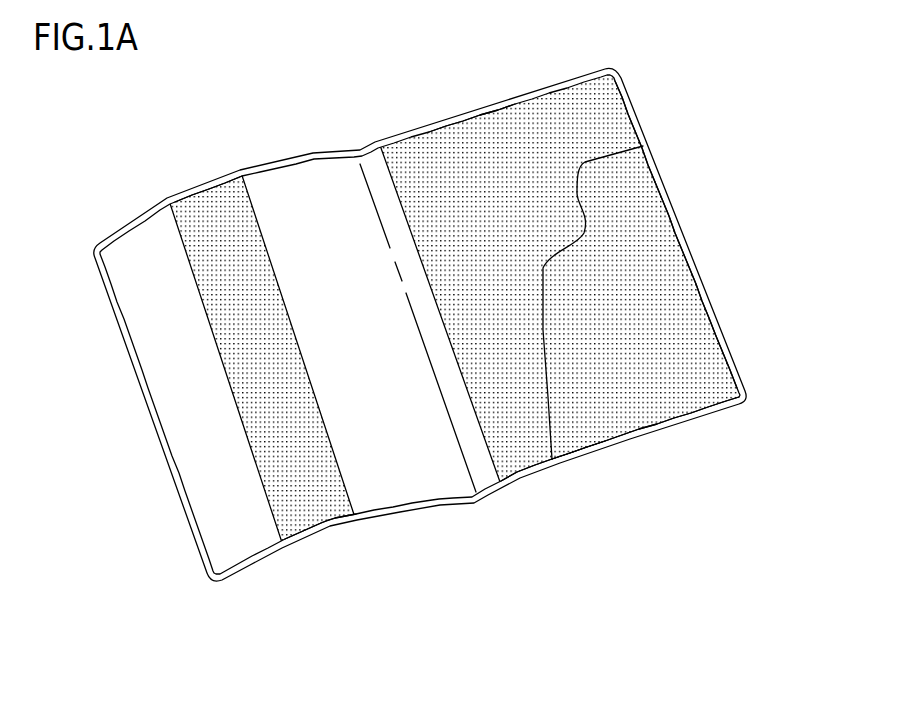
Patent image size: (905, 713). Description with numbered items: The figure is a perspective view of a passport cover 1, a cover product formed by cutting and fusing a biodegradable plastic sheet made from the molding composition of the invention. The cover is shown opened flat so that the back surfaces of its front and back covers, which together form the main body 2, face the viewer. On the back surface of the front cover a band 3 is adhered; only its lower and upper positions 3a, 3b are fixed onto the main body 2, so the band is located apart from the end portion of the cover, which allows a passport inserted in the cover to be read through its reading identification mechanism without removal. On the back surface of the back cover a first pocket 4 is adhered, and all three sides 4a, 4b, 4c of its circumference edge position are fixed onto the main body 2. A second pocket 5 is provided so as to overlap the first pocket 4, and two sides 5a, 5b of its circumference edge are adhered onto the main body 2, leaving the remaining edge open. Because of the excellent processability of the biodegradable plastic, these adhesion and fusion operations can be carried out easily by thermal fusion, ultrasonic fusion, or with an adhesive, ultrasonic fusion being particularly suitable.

The passport cover 1 is at (357, 117).
The main body 2 is at (295, 188).
The band 3 is at (223, 210).
The lower position of the band 3a is at (188, 186).
The upper position of the band 3b is at (315, 531).
The first pocket 4 is at (538, 113).
The side of the circumference edge position of the first pocket 4a is at (467, 104).
The side of the circumference edge position of the first pocket 4b is at (642, 122).
The side of the circumference edge position of the first pocket 4c is at (522, 482).
The second pocket 5 is at (680, 343).
The side of the circumference edge of the second pocket 5a is at (682, 213).
The side of the circumference edge of the second pocket 5b is at (615, 442).